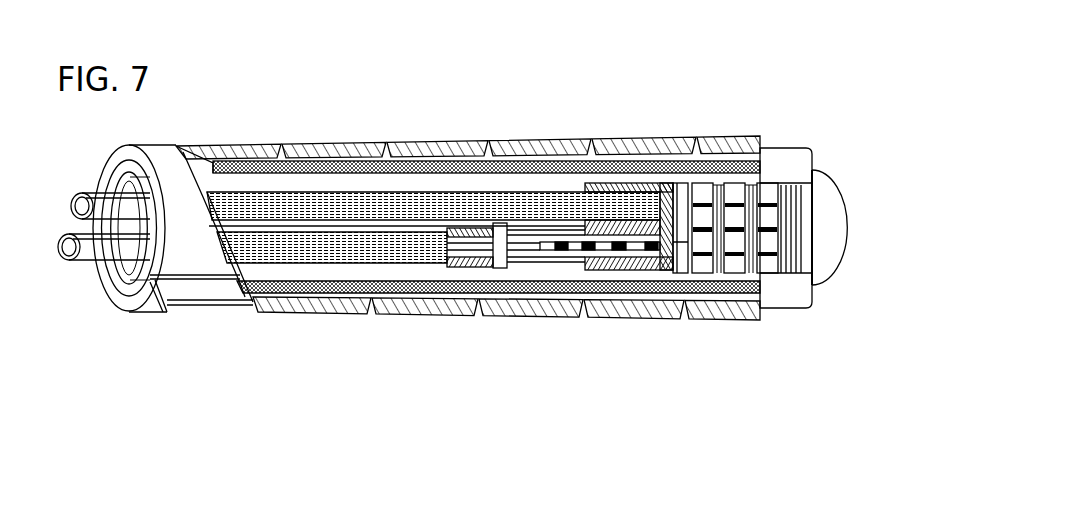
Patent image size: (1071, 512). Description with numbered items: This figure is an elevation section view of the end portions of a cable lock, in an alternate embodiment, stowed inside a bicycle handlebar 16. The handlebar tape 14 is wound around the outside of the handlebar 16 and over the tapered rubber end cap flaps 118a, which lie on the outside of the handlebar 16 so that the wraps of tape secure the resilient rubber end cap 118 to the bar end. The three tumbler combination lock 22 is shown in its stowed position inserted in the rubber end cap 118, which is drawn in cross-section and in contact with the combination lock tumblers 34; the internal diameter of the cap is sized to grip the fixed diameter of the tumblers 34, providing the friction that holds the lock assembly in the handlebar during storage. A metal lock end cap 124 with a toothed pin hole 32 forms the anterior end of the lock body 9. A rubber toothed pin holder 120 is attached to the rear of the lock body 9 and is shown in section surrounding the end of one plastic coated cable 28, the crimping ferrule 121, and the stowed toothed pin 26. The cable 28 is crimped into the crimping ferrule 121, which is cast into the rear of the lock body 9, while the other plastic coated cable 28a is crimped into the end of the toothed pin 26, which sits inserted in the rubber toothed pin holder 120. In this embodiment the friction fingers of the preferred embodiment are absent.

The handlebar 16 is at (272, 147).
The plastic coated cable 28 is at (357, 203).
The plastic coated cable 28a is at (258, 262).
The handlebar tape 14 is at (445, 147).
The rubber toothed pin holder 120 is at (590, 183).
The crimping ferrule 121 is at (628, 183).
The three tumbler combination lock 22 is at (693, 183).
The combination lock tumblers 34 is at (772, 185).
The toothed pin 26 is at (523, 255).
The rubber end cap flaps 118a is at (592, 297).
The lock body 9 is at (680, 253).
The rubber end cap 118 is at (787, 292).
The metal lock end cap 124 is at (830, 263).
The toothed pin hole 32 is at (847, 237).